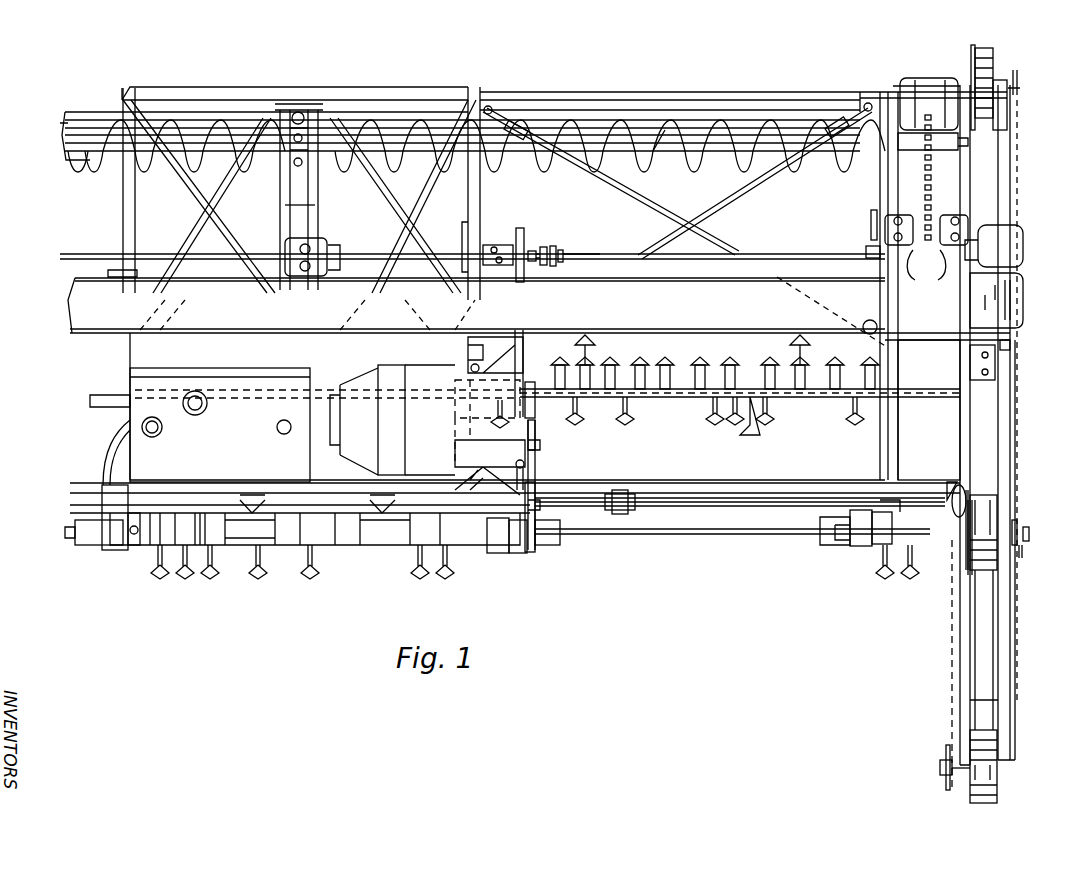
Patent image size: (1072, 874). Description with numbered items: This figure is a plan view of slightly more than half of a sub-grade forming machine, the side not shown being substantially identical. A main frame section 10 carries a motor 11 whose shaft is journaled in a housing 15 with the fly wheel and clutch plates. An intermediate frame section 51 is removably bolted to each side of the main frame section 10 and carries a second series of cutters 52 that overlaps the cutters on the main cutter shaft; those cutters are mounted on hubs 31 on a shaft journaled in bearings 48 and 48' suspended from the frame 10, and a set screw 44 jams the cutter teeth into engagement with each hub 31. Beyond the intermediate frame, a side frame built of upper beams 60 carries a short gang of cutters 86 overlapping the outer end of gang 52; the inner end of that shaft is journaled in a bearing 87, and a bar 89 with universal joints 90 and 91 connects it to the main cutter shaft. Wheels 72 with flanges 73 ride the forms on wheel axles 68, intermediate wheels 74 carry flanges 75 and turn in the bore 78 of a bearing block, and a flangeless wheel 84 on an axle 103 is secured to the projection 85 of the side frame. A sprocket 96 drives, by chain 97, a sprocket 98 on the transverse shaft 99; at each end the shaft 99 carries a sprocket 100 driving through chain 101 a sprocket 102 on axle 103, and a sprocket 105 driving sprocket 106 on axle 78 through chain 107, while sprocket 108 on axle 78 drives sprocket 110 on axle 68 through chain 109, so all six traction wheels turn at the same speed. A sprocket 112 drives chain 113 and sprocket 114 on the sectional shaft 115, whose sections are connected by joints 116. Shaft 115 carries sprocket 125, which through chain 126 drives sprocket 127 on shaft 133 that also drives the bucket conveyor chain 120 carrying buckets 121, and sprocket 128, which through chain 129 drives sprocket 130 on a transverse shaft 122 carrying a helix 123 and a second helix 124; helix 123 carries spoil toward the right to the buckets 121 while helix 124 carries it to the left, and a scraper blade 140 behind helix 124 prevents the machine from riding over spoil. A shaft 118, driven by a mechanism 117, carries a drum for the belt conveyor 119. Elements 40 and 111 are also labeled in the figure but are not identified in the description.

The main frame section 10 is at (398, 92).
The intermediate frame section 51 is at (695, 100).
The second helix 124 is at (88, 174).
The shaft 122 is at (707, 160).
The helix 123 is at (670, 160).
The sprocket 130 is at (330, 160).
The chain 129 is at (325, 211).
The sprocket 128 is at (332, 246).
The shaft 115 is at (588, 256).
The sprocket 114 is at (527, 235).
The joints 116 is at (555, 245).
The belt conveyor 119 is at (476, 305).
The scraper blade 140 is at (606, 122).
The sprocket 125 is at (874, 262).
The sprocket 127 is at (870, 218).
The chain 126 is at (866, 244).
The motor 11 is at (305, 426).
The housing 15 is at (392, 420).
The chain 113 is at (540, 352).
The second series of cutters 52 is at (612, 384).
The sprocket 112 is at (536, 405).
The sprocket 96 is at (536, 424).
The chain 97 is at (537, 460).
The hub 31 is at (345, 545).
The feet 40 is at (308, 566).
The bearing 48 is at (96, 533).
The set screw 44 is at (133, 548).
The bearing member 48' is at (500, 550).
The sprocket 98 is at (529, 553).
The universal joint 91 is at (546, 540).
The shaft 99 is at (748, 508).
The bar 89 is at (674, 536).
The coupling 111 is at (624, 490).
The universal joint 90 is at (832, 538).
The bearing 87 is at (858, 540).
The short gang of cutters 86 is at (888, 545).
The upper angle-irons or beams 60 is at (962, 405).
The flanges 75 is at (976, 572).
The buckets 121 is at (928, 96).
The shaft 133 is at (920, 222).
The bucket conveyor chain 120 is at (934, 188).
The flanges 73 is at (971, 42).
The wheels 72 is at (990, 62).
The wheel axle 68 is at (1002, 80).
The sprocket 110 is at (1018, 86).
The mechanism 117 is at (1012, 240).
The shaft 118 is at (1010, 272).
The chain 109 is at (1012, 380).
The sprocket 100 is at (956, 490).
The sprocket 105 is at (968, 485).
The intermediate wheels 74 is at (990, 512).
The chain 107 is at (1004, 500).
The sprocket 108 is at (1020, 524).
The axle 78 is at (1021, 558).
The sprocket 106 is at (968, 553).
The chain 101 is at (950, 608).
The projection or extension 85 is at (1022, 660).
The flangeless wheel 84 is at (992, 790).
The sprocket 102 is at (942, 758).
The axle 103 is at (948, 790).